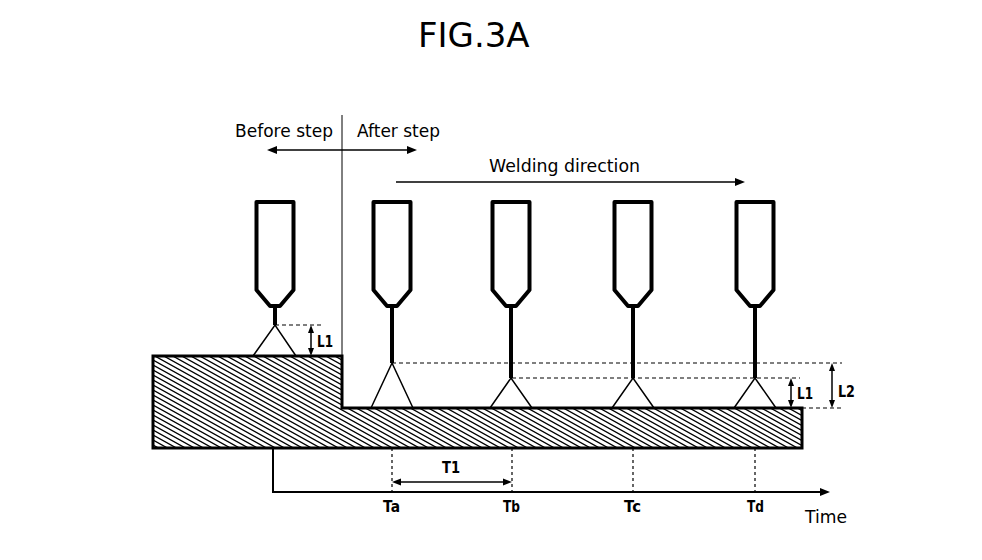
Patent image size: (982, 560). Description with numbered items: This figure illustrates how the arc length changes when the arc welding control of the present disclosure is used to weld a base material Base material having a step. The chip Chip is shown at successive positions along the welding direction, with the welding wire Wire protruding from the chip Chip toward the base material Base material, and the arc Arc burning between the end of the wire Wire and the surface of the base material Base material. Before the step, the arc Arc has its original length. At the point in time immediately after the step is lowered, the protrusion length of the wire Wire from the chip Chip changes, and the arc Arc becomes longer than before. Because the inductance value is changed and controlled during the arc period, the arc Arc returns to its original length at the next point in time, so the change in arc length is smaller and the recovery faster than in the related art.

The chip Chip is at (250, 198).
The welding wire Wire is at (268, 316).
The arc Arc is at (267, 343).
The base material Base material is at (149, 405).